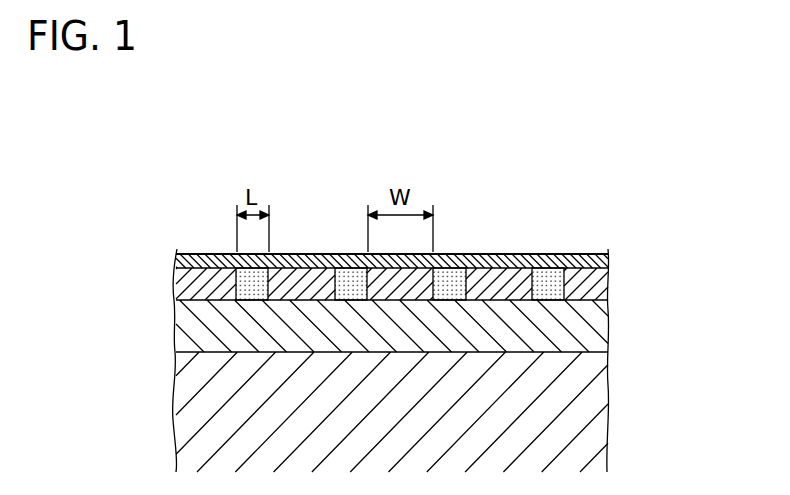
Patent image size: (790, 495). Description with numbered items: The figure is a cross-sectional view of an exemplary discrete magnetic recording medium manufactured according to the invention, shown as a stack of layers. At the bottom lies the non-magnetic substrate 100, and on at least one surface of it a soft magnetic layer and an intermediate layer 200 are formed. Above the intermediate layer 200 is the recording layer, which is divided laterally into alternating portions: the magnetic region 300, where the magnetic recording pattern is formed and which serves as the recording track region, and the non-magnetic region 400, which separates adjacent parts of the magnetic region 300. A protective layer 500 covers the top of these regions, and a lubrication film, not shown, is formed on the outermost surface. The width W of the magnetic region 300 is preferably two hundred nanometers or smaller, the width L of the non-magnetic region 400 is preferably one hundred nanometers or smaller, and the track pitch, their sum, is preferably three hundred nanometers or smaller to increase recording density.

The non-magnetic substrate 100 is at (600, 405).
The intermediate layer 200 is at (598, 325).
The magnetic region 300 is at (598, 285).
The non-magnetic region 400 is at (546, 283).
The protective layer 500 is at (598, 259).